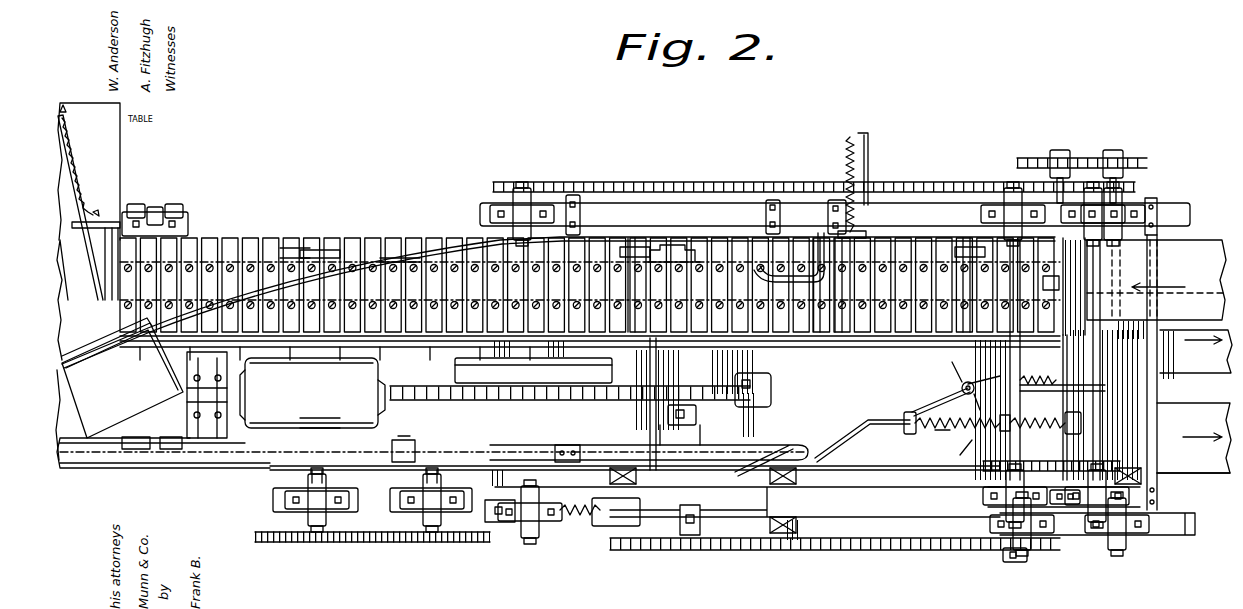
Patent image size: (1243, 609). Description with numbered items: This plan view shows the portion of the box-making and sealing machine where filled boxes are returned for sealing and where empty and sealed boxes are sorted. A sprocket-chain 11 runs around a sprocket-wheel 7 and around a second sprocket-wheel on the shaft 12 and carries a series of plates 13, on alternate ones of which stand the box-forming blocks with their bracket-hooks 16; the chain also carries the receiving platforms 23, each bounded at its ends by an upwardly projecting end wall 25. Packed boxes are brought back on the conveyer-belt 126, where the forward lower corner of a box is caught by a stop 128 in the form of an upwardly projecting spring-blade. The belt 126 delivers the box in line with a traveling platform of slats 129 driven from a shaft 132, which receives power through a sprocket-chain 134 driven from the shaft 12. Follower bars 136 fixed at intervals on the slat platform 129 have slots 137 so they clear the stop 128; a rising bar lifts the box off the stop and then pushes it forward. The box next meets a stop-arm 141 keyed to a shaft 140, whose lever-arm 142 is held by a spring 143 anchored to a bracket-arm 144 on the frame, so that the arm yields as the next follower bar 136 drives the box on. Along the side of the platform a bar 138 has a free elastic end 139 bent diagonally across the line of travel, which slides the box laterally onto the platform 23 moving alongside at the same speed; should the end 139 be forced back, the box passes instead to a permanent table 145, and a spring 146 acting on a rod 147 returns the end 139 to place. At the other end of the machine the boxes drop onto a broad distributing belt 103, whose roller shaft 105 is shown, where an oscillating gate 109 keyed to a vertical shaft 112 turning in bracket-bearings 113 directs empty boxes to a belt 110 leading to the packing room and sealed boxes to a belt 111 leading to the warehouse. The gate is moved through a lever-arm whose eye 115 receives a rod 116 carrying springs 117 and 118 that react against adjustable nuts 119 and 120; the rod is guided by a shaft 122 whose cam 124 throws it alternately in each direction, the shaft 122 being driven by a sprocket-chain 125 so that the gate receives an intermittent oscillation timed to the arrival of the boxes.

The sprocket-wheel 7 is at (668, 412).
The sprocket-chain 11 is at (740, 386).
The shaft 12 is at (690, 440).
The plates 13 is at (548, 350).
The bracket-hooks 16 is at (296, 398).
The platform 23 is at (178, 449).
The end wall 25 is at (192, 376).
The traveling belt 103 is at (880, 466).
The shaft 105 is at (1033, 182).
The oscillating gate 109 is at (930, 408).
The belt 110 is at (1200, 474).
The belt 111 is at (1186, 372).
The vertical shaft 112 is at (960, 385).
The bracket-bearings 113 is at (960, 380).
The eye 115 is at (996, 412).
The rod 116 is at (856, 440).
The spring 117 is at (1050, 428).
The spring 118 is at (966, 440).
The nut 119 is at (1082, 424).
The nut 120 is at (908, 432).
The shaft 122 is at (455, 374).
The cam 124 is at (405, 452).
The sprocket-chain 125 is at (396, 258).
The conveyer-belt 126 is at (1182, 250).
The stop 128 is at (1058, 288).
The slats 129 is at (835, 335).
The shaft 132 is at (1012, 563).
The sprocket-chain 134 is at (866, 555).
The follower bars 136 is at (305, 250).
The notches or slots 137 is at (631, 255).
The bar 138 is at (693, 244).
The free elastic end 139 is at (292, 247).
The shaft 140 is at (820, 260).
The arm 141 is at (818, 260).
The lever-arm 142 is at (848, 160).
The spring 143 is at (880, 204).
The bracket-arm 144 is at (868, 168).
The permanent table 145 is at (112, 178).
The spring 146 is at (80, 156).
The rod 147 is at (64, 350).